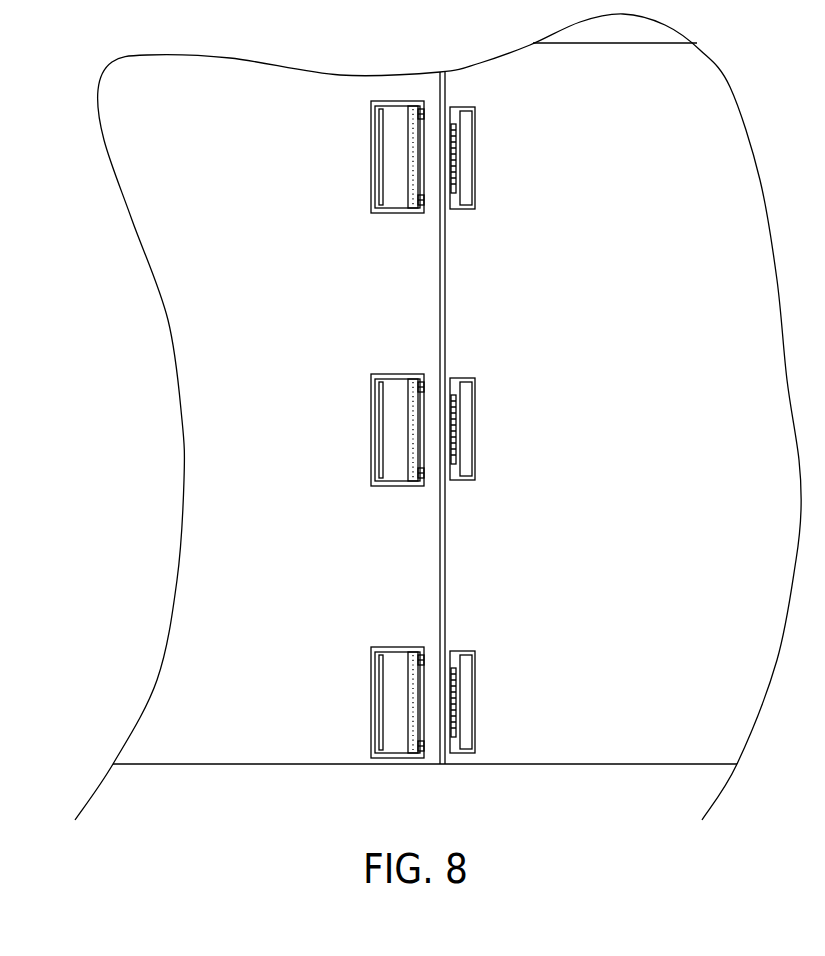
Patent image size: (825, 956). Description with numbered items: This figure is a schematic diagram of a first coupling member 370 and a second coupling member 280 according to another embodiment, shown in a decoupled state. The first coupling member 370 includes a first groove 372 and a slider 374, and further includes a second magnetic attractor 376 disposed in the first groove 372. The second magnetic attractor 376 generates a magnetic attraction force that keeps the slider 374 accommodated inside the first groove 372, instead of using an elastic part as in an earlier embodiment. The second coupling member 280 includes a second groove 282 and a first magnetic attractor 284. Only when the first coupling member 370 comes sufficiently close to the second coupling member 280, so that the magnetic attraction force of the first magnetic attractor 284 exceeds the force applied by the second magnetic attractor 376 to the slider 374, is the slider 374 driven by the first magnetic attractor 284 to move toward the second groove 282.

The first coupling member 370 is at (342, 674).
The first groove 372 is at (384, 700).
The slider 374 is at (414, 653).
The second magnetic attractor 376 is at (384, 726).
The second coupling member 280 is at (519, 672).
The second groove 282 is at (454, 645).
The first magnetic attractor 284 is at (472, 683).